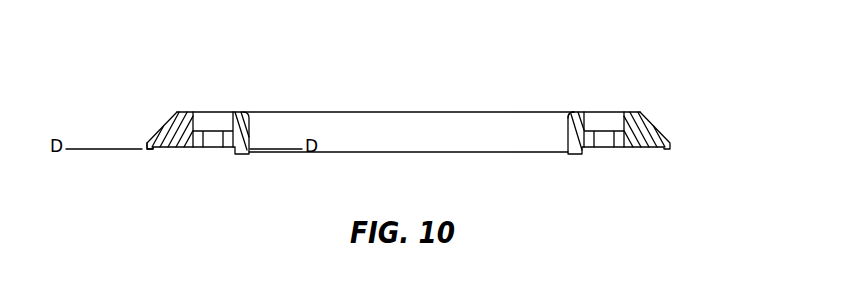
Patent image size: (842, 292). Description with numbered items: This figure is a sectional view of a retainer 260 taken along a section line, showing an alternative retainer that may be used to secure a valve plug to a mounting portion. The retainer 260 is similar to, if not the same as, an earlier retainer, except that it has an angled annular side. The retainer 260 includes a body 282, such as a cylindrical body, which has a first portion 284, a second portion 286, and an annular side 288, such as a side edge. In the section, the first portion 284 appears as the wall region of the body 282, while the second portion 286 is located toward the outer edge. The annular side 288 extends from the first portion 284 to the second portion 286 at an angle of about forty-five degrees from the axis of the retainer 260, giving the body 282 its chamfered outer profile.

The retainer 260 is at (668, 37).
The body 282 is at (580, 101).
The first portion 284 is at (240, 134).
The second portion 286 is at (146, 147).
The annular side 288 is at (176, 112).